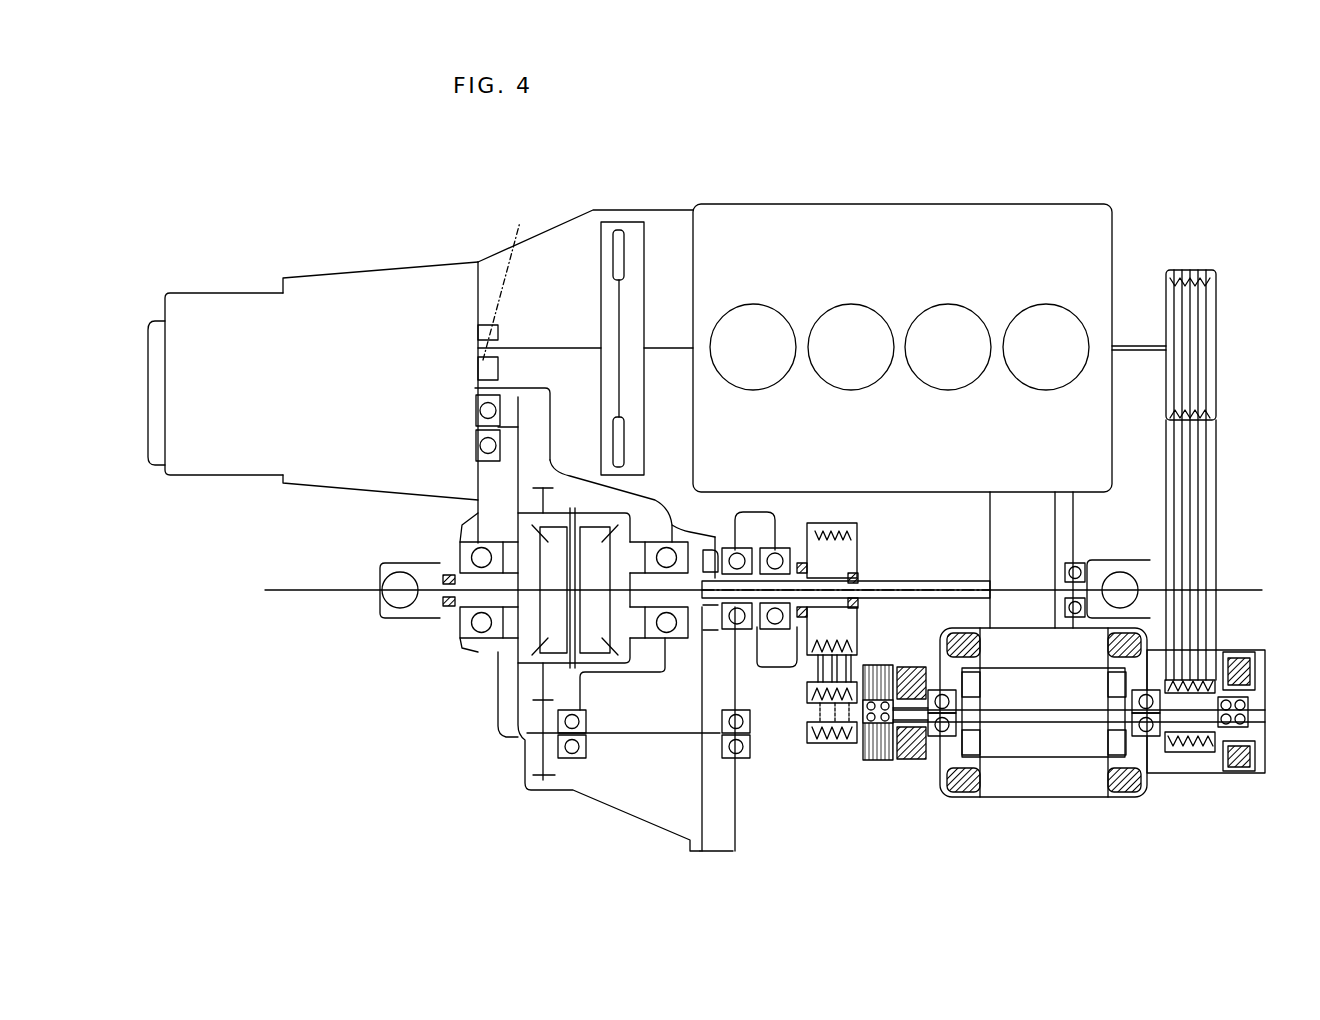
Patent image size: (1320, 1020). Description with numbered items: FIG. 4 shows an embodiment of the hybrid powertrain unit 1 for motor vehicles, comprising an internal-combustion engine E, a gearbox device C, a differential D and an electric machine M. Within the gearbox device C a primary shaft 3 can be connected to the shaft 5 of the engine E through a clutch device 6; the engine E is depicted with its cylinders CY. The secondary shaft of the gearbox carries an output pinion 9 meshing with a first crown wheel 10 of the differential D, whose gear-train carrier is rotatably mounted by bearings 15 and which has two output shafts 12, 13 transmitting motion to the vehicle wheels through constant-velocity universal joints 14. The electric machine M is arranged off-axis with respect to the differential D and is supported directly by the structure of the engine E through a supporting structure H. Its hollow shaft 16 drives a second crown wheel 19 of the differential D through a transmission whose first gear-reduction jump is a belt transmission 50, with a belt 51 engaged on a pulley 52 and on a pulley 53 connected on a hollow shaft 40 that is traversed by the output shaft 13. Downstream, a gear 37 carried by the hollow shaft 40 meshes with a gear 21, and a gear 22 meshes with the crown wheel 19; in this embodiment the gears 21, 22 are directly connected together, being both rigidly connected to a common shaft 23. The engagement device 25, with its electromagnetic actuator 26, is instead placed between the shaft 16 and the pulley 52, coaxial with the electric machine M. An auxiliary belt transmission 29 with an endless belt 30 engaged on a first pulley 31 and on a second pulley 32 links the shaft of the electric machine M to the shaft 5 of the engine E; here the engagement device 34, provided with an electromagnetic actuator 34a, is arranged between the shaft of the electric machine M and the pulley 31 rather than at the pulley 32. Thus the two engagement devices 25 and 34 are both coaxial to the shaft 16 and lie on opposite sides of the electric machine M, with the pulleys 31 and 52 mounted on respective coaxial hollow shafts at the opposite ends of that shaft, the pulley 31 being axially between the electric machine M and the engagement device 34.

The hybrid powertrain unit 1 is at (256, 232).
The gearbox device C is at (147, 380).
The internal-combustion engine E is at (1114, 228).
The cylinder CY is at (817, 308).
The primary shaft 3 is at (576, 345).
The shaft of the engine 5 is at (676, 345).
The clutch device 6 is at (652, 262).
The output pinion 9 is at (521, 418).
The first crown wheel 10 is at (523, 482).
The output shaft 12 is at (458, 602).
The output shaft 13 is at (918, 582).
The constant-velocity universal joints 14 is at (397, 592).
The bearings 15 is at (705, 535).
The shaft of the electric machine 16 is at (1040, 722).
The second crown wheel 19 is at (548, 495).
The gear 21 is at (720, 815).
The gear 22 is at (541, 763).
The common shaft 23 is at (636, 748).
The engagement device 25 is at (876, 766).
The electromagnetic actuator 26 is at (913, 762).
The auxiliary belt transmission 29 is at (1234, 540).
The endless belt 30 is at (1198, 453).
The first pulley 31 is at (1188, 756).
The second pulley 32 is at (1198, 314).
The engagement device 34 is at (1264, 792).
The electromagnetic actuator 34a is at (1242, 655).
The gear 37 is at (722, 515).
The hollow shaft 40 is at (752, 622).
The belt transmission 50 is at (878, 562).
The belt 51 is at (835, 623).
The pulley 52 is at (836, 742).
The pulley 53 is at (812, 520).
The differential D is at (510, 645).
The supporting structure H is at (1036, 541).
The electric machine M is at (1079, 800).